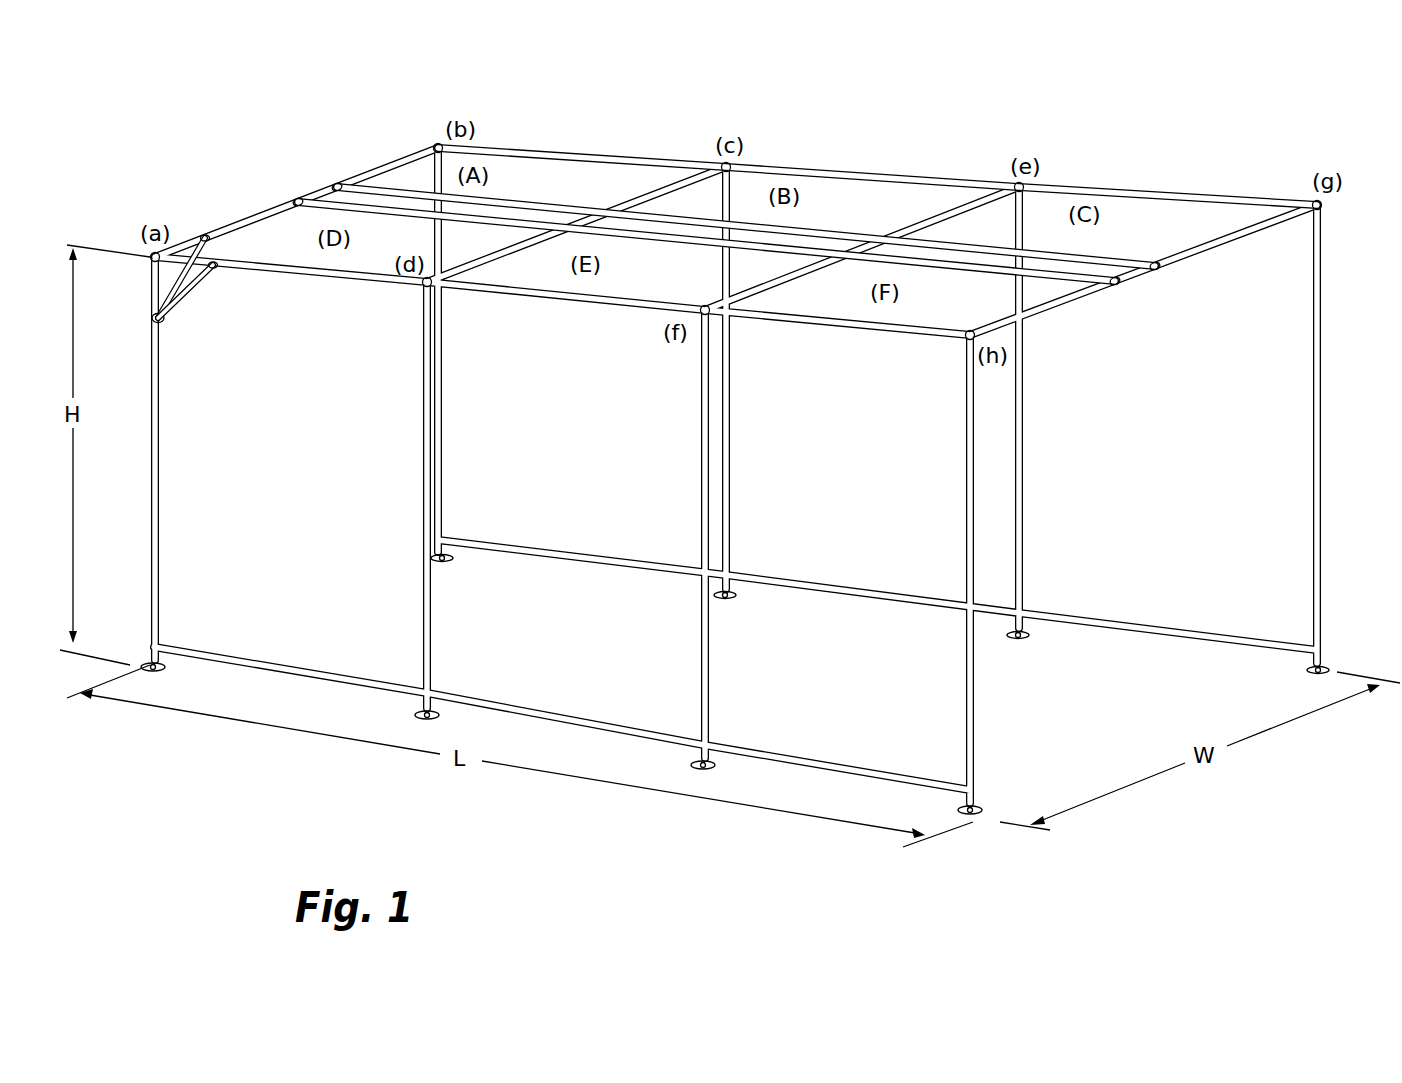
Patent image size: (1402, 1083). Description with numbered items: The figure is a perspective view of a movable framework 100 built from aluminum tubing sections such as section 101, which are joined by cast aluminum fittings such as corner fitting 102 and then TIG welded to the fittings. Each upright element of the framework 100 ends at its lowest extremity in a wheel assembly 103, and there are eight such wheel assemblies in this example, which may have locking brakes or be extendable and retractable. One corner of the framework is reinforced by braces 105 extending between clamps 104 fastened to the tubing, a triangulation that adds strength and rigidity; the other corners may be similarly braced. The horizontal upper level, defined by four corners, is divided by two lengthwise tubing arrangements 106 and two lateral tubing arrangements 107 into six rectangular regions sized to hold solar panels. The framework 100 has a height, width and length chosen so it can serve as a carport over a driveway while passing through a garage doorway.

The movable framework 100 is at (258, 82).
The tubing section 101 is at (495, 150).
The fitting 102 is at (437, 143).
The wheel assembly 103 is at (182, 667).
The clamp 104 is at (152, 320).
The brace 105 is at (198, 290).
The lengthwise tubing arrangement 106 is at (488, 214).
The lateral tubing arrangement 107 is at (936, 207).